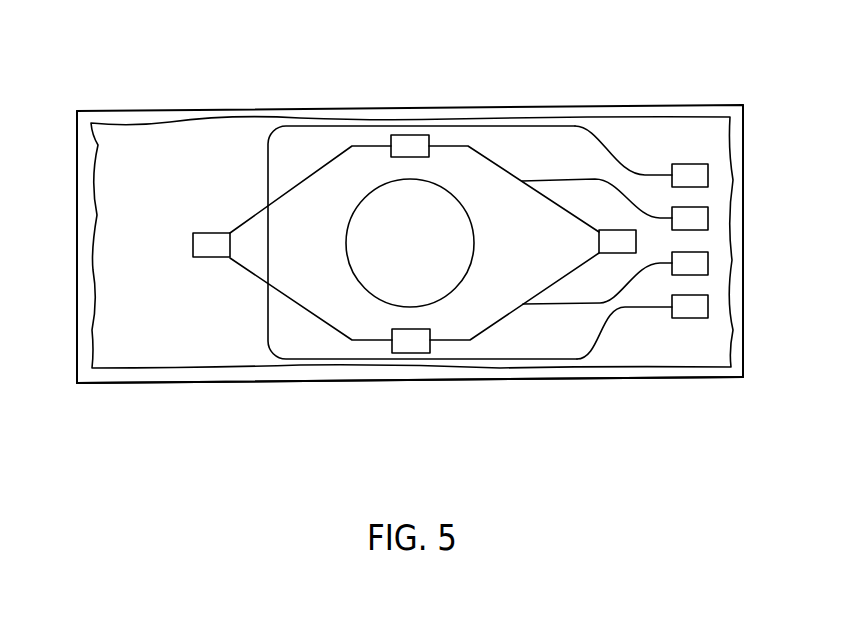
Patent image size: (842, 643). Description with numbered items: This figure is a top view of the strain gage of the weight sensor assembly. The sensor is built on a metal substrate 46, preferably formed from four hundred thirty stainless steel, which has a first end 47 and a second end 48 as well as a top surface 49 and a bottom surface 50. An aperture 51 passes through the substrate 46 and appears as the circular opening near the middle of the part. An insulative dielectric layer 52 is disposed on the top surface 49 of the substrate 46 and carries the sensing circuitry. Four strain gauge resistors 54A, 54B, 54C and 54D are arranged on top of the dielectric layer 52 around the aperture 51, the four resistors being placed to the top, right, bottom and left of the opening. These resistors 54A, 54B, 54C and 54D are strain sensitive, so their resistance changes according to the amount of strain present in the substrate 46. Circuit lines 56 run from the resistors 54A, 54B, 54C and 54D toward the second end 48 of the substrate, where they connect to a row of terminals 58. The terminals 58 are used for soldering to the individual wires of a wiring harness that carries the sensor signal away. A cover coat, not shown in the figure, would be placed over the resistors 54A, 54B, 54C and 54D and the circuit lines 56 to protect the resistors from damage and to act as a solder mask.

The metal substrate 46 is at (72, 247).
The first end 47 is at (77, 150).
The second end 48 is at (743, 309).
The top surface 49 is at (203, 192).
The bottom surface 50 is at (147, 383).
The aperture 51 is at (424, 249).
The insulative dielectric layer 52 is at (232, 143).
The strain gauge resistor 54A is at (403, 143).
The strain gauge resistor 54B is at (607, 244).
The strain gauge resistor 54C is at (408, 352).
The strain gauge resistor 54D is at (208, 257).
The circuit lines 56 is at (608, 318).
The terminals 58 is at (688, 173).